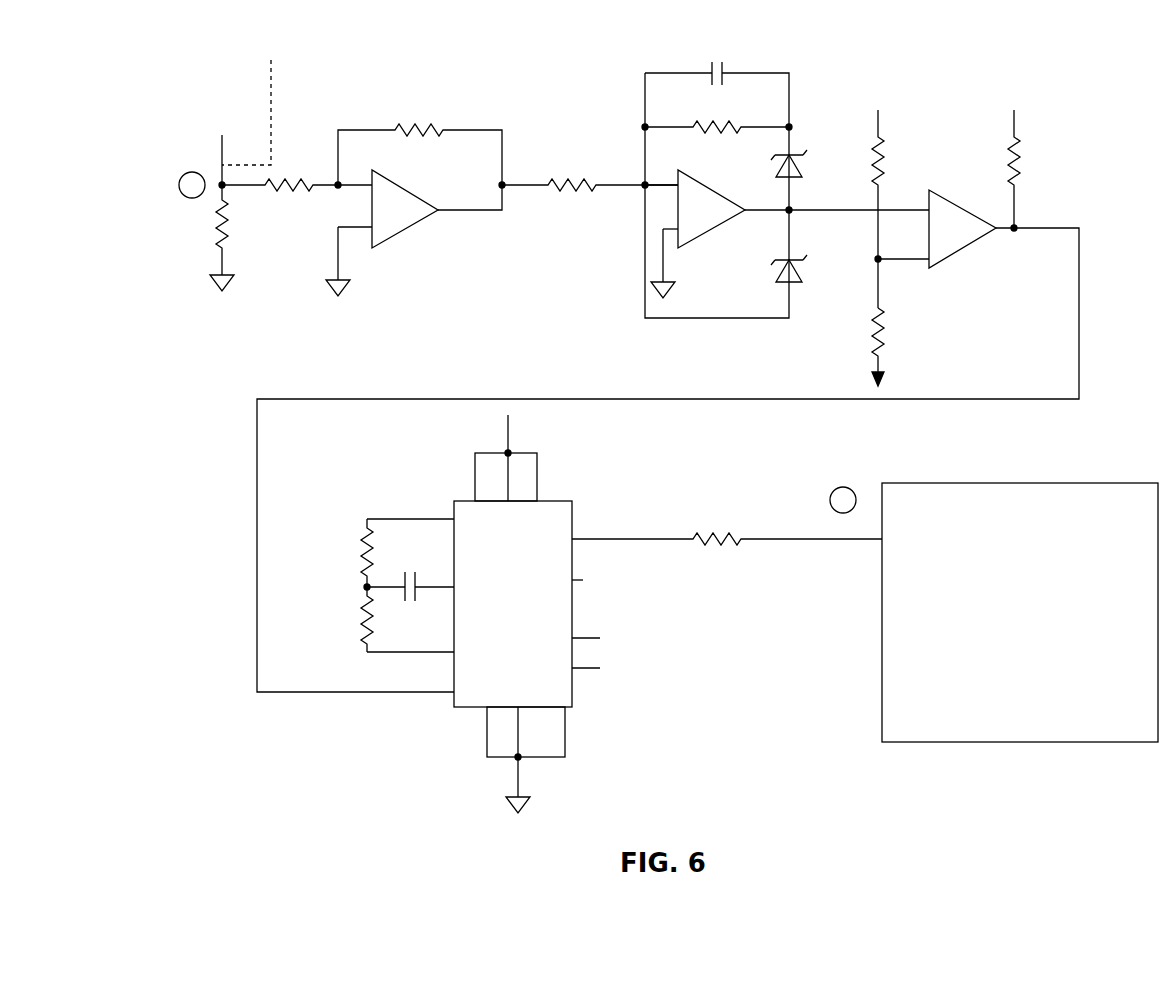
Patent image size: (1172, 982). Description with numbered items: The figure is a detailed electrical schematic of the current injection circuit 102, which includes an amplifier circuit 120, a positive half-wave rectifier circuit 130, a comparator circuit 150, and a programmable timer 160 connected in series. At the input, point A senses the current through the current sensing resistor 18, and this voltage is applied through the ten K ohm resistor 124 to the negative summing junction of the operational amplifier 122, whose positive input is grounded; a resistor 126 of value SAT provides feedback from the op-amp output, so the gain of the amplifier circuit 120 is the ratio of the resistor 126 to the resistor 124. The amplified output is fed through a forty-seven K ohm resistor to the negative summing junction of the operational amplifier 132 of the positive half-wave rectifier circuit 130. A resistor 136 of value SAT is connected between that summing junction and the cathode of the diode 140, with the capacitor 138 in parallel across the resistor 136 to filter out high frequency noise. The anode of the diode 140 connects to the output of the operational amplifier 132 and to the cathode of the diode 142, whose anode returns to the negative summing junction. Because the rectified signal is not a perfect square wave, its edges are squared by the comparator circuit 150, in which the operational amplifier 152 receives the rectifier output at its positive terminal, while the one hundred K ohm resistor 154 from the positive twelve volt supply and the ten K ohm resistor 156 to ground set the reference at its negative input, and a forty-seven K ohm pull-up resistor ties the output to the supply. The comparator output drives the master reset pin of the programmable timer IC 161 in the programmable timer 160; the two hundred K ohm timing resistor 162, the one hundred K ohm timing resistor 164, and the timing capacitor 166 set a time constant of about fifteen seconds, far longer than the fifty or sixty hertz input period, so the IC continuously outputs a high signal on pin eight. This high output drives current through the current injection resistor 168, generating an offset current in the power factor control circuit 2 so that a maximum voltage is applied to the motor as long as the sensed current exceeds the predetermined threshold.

The current injection circuit 102 is at (183, 77).
The current sensing resistor 18 is at (206, 238).
The 10 K ohms resistor 124 is at (273, 195).
The amplifier circuit 120 is at (395, 268).
The operational amplifier 122 is at (405, 237).
The resistor of value SAT 126 is at (440, 137).
The positive half-wave rectifier circuit 130 is at (666, 332).
The operational amplifier 132 is at (720, 237).
The resistor of value SAT 136 is at (694, 134).
The capacitor 138 is at (726, 68).
The diode 140 is at (798, 160).
The diode 142 is at (770, 273).
The comparator circuit 150 is at (963, 261).
The operational amplifier 152 is at (880, 133).
The 100K ohms resistor 154 is at (870, 342).
The 10K ohms resistor 156 is at (1017, 133).
The programmable timer 160 is at (595, 683).
The programmable timer IC 161 is at (576, 575).
The 200K ohms timing resistor 162 is at (362, 526).
The 100K ohms timing resistor 164 is at (360, 645).
The 0.001 μF timing capacitor 166 is at (402, 582).
The current injection resistor 168 is at (745, 543).
The power factor control circuit 2 is at (913, 482).